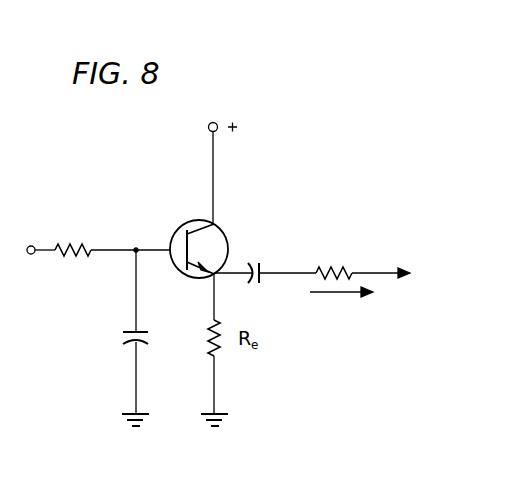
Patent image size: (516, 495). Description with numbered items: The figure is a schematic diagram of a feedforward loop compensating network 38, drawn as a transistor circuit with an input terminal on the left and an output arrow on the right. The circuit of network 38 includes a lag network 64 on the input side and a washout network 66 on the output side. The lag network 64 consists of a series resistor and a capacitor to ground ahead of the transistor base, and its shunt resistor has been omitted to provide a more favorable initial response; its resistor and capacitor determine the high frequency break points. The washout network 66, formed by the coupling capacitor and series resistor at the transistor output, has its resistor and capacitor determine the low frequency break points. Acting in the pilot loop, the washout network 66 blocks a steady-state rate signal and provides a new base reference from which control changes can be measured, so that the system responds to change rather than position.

The network 38 is at (242, 193).
The lag network 64 is at (79, 321).
The washout network 66 is at (306, 226).